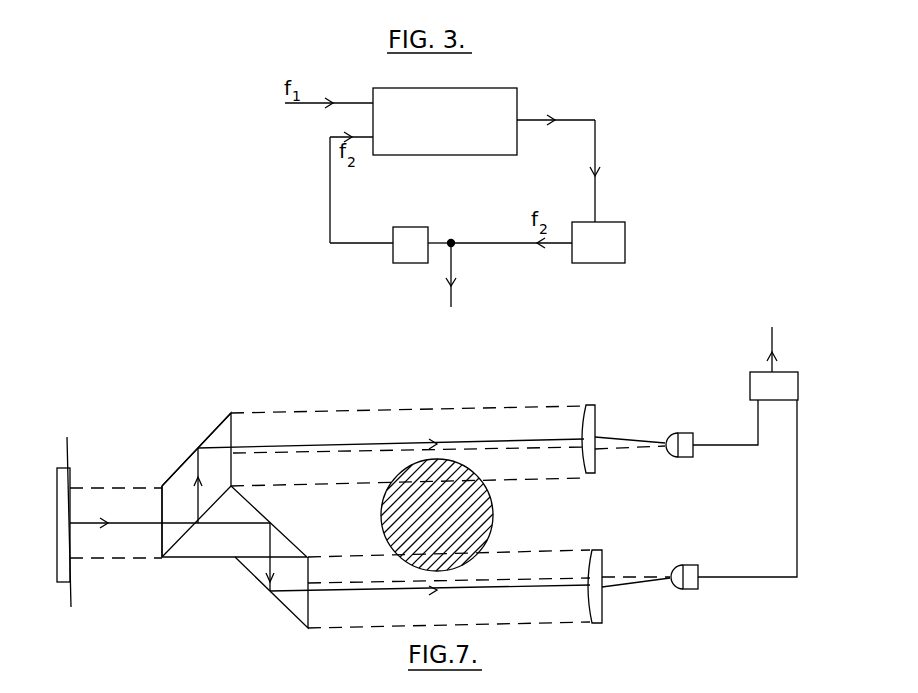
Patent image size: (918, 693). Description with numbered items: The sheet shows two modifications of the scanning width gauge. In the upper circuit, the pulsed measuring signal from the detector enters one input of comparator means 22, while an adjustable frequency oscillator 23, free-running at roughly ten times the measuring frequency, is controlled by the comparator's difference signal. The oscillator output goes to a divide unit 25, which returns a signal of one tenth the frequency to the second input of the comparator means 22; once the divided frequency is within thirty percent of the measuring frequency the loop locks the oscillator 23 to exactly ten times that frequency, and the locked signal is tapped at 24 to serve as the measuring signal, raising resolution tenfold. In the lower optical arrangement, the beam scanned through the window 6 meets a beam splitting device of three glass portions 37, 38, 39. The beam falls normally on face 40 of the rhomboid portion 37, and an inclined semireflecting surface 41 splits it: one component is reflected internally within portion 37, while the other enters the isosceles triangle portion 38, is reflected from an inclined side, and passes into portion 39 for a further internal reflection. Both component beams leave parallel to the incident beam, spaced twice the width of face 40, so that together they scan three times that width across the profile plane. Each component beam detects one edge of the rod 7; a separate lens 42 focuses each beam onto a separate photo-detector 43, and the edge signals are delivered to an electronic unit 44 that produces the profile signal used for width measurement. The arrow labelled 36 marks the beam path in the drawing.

In FIG. 3, the comparator means 22 is at (458, 88).
In FIG. 3, the adjustable frequency oscillator 23 is at (612, 263).
In FIG. 3, the tap 24 is at (451, 303).
In FIG. 3, the divide unit 25 is at (405, 263).
In FIG. 7, the window 6 is at (57, 566).
In FIG. 7, the rod 7 is at (472, 527).
In FIG. 7, the light beam 36 is at (243, 578).
In FIG. 7, the rhomboid glass portion 37 is at (183, 481).
In FIG. 7, the isosceles triangle glass portion 38 is at (202, 543).
In FIG. 7, the glass portion 39 is at (293, 600).
In FIG. 7, the face 40 is at (162, 503).
In FIG. 7, the semireflecting surface 41 is at (185, 537).
In FIG. 7, the lens 42 is at (595, 468).
In FIG. 7, the photo-detector 43 is at (682, 458).
In FIG. 7, the electronic unit 44 is at (798, 386).